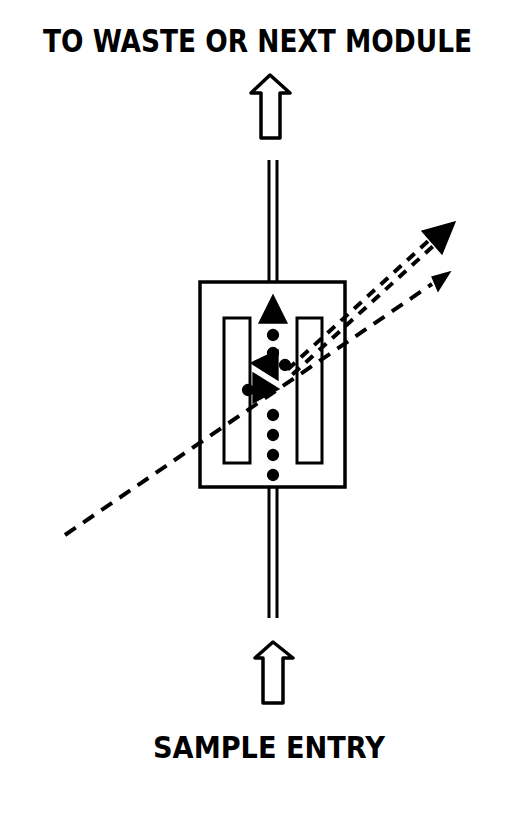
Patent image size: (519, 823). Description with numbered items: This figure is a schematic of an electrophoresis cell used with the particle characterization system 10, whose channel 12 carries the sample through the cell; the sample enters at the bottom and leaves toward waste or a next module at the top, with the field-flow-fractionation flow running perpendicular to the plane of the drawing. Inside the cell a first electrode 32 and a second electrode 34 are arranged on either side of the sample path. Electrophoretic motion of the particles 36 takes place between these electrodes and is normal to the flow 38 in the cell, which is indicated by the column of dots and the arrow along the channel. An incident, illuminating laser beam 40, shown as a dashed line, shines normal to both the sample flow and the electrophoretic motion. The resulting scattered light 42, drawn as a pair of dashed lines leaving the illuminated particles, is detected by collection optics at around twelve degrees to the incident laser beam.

The particle characterization system 10 is at (433, 763).
The channel 12 is at (310, 488).
The first electrode 32 is at (223, 385).
The second electrode 34 is at (322, 382).
The particles 36 is at (250, 342).
The flow 38 is at (287, 427).
The incident laser beam 40 is at (170, 466).
The scattered light 42 is at (409, 263).